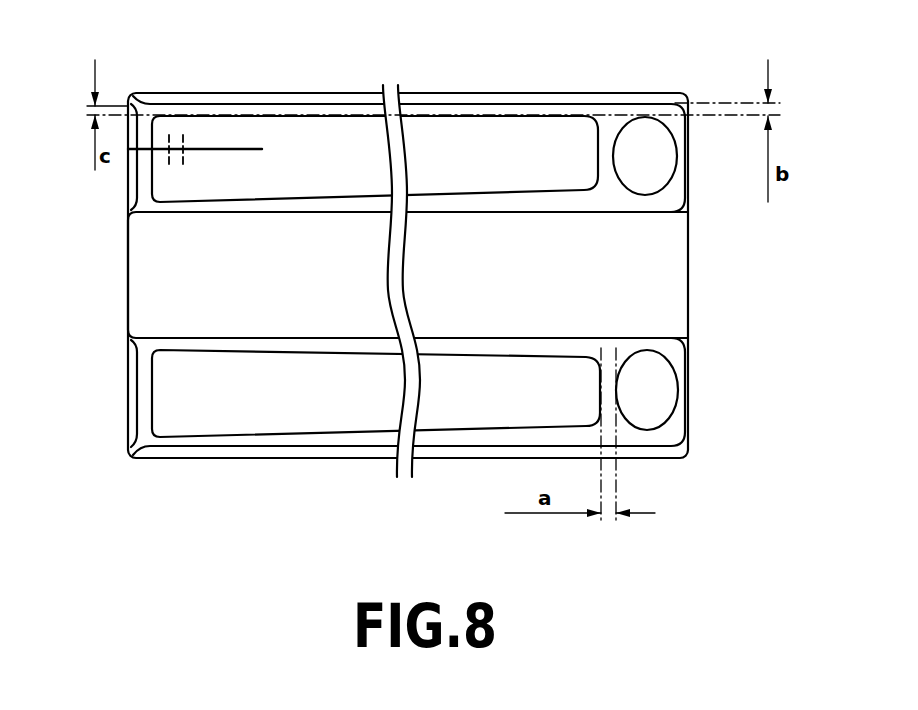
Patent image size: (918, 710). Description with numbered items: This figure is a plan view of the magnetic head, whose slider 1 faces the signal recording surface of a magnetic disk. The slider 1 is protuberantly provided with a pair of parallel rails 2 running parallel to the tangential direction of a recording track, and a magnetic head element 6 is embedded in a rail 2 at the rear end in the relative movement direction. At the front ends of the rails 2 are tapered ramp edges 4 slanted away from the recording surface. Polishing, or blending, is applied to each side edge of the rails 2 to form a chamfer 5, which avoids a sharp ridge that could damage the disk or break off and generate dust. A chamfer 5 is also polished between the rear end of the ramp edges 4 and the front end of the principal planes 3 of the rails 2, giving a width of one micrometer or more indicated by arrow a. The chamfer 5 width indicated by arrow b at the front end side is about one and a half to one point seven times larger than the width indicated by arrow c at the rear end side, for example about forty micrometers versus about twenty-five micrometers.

The slider 1 is at (118, 306).
The rails 2 is at (231, 214).
The principal planes 3 is at (305, 143).
The tapered ramp edges 4 is at (661, 157).
The chamfer 5 is at (645, 197).
The magnetic head element 6 is at (178, 136).